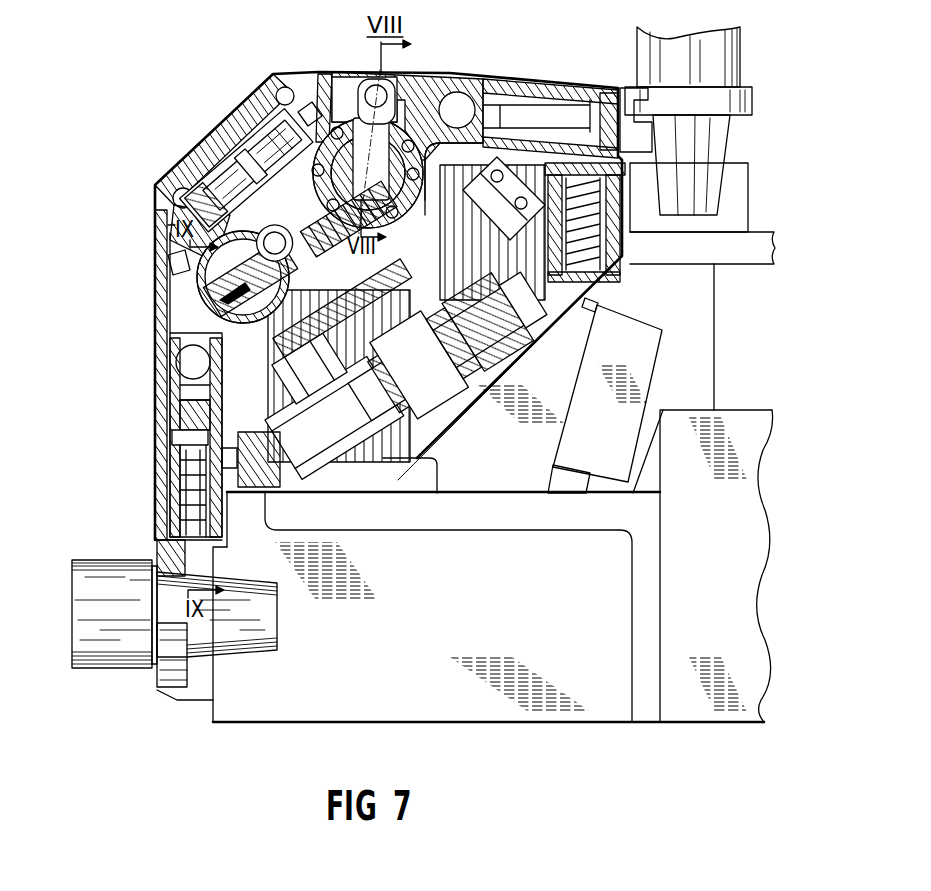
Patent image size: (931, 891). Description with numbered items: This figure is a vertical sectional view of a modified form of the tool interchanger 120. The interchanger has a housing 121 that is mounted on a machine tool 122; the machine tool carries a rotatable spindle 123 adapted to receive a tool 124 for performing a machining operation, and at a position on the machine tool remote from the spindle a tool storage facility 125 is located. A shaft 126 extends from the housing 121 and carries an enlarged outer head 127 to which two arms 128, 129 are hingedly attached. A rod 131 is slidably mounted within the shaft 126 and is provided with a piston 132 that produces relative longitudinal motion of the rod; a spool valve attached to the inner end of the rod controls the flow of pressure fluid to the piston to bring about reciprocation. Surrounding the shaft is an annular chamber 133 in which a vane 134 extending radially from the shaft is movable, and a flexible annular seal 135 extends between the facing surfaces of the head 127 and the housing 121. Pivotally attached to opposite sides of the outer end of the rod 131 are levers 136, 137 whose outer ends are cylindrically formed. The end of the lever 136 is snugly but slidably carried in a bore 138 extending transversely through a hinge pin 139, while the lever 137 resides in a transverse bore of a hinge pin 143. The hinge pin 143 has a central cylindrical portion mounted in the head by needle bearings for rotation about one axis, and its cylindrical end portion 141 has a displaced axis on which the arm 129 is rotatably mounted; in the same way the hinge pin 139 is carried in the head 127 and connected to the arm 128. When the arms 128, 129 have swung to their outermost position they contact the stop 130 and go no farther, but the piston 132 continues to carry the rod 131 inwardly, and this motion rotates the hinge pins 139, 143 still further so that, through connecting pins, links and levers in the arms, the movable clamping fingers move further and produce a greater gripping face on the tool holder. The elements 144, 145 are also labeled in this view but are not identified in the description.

The interchanger 120 is at (183, 140).
The housing 121 is at (596, 313).
The machine tool 122 is at (742, 426).
The rotatable spindle 123 is at (222, 672).
The tool 124 is at (93, 658).
The tool storage facility 125 is at (735, 203).
The shaft 126 is at (434, 352).
The enlarged outer head 127 is at (234, 313).
The arm 128 is at (160, 393).
The arm 129 is at (496, 87).
The stop 130 is at (240, 168).
The rod 131 is at (334, 295).
The piston 132 is at (498, 315).
The annular chamber 133 is at (467, 305).
The vane 134 is at (335, 419).
The flexible annular seal 135 is at (283, 376).
The lever 136 is at (289, 229).
The lever 137 is at (309, 124).
The bore 138 is at (226, 298).
The hinge pin 139 is at (228, 291).
The end portion 141 is at (330, 72).
The hinge pin 143 is at (395, 145).
The block 144 is at (490, 228).
The recess 145 is at (443, 171).